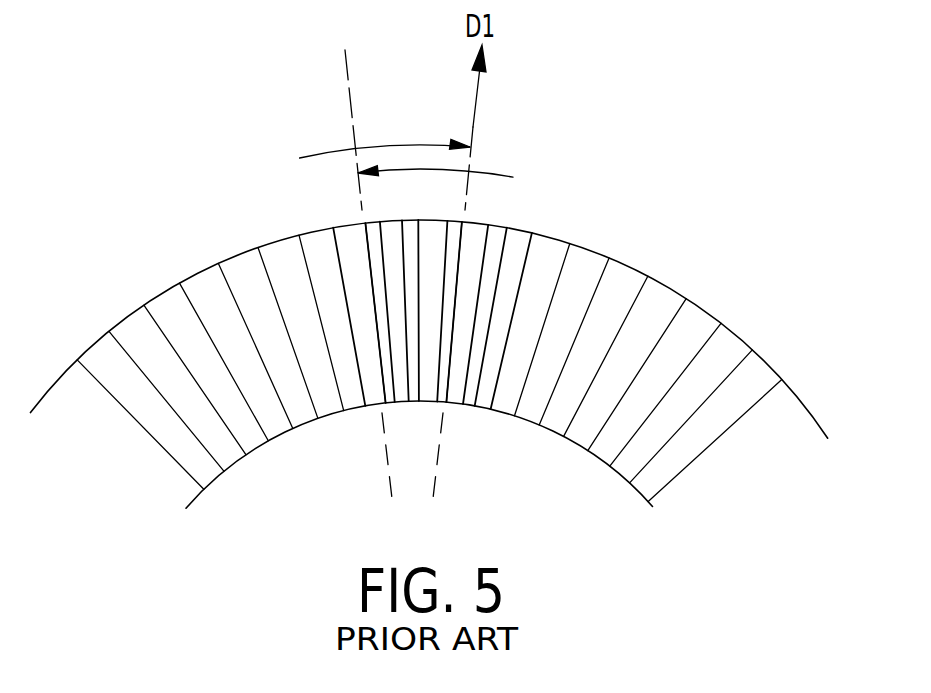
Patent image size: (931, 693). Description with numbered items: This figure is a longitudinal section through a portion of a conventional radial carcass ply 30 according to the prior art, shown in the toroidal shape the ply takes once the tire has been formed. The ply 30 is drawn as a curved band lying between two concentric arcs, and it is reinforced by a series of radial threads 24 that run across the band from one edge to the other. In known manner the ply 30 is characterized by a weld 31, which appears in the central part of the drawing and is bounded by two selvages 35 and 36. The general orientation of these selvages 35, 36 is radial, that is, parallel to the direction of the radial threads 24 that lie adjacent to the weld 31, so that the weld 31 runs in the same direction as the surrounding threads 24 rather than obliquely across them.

The radial threads 24 is at (226, 264).
The radial ply 30 is at (610, 223).
The weld 31 is at (388, 248).
The selvage 35 is at (449, 378).
The selvage 36 is at (376, 385).